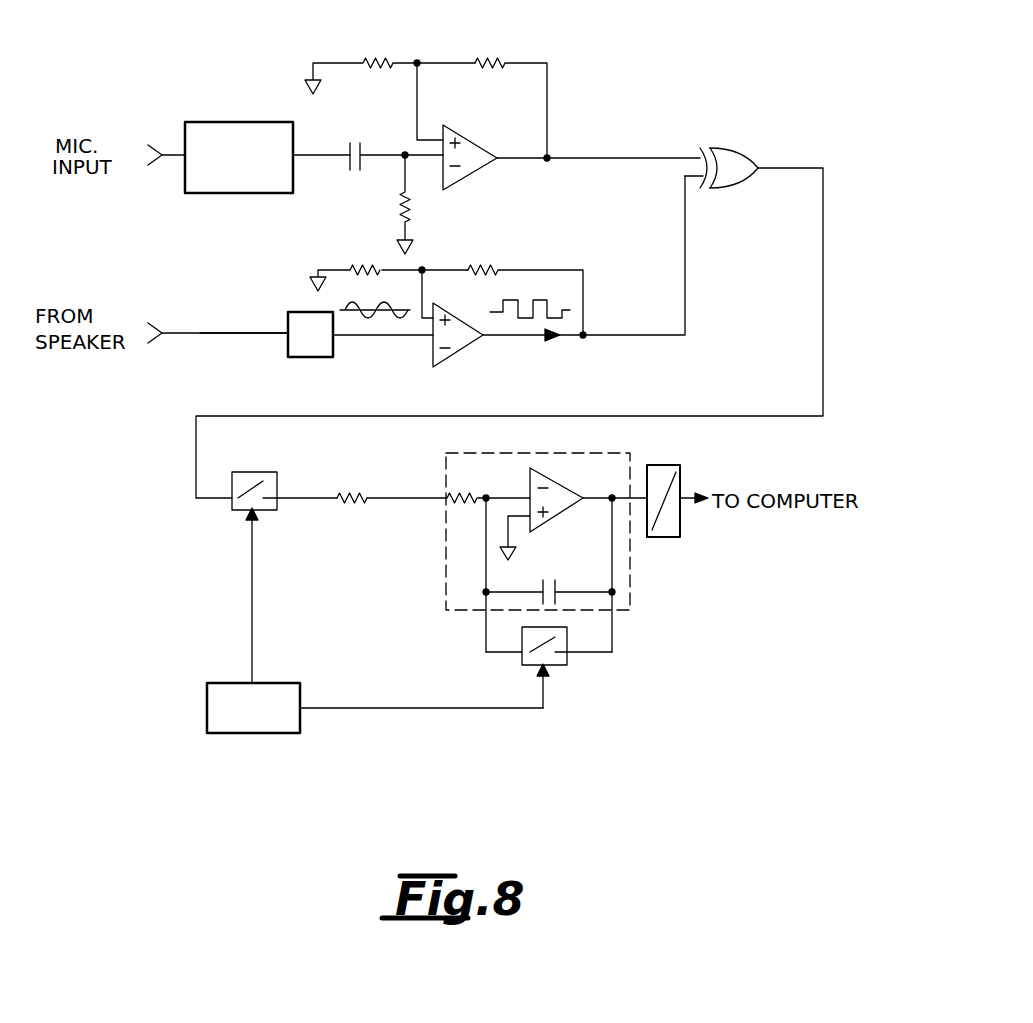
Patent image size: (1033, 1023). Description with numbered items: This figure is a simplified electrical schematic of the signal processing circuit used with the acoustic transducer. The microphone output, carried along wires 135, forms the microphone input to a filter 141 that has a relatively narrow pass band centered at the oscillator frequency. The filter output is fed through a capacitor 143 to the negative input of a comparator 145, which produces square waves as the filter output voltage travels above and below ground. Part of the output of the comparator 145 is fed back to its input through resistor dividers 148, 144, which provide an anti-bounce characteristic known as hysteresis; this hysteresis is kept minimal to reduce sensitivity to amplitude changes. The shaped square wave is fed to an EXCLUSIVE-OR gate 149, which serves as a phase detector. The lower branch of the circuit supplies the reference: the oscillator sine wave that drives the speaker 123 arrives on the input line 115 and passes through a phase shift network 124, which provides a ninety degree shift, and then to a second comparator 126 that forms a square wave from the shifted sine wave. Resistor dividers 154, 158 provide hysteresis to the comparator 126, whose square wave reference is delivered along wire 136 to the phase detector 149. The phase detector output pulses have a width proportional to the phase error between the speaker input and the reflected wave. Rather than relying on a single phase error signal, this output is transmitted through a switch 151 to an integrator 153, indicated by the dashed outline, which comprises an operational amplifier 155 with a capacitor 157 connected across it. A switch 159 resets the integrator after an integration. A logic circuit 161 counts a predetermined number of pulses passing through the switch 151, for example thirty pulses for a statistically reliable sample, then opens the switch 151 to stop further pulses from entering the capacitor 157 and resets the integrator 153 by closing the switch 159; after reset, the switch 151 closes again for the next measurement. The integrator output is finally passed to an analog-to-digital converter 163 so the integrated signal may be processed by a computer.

The wires 135 is at (168, 154).
The filter 141 is at (232, 194).
The capacitor 143 is at (365, 143).
The resistor divider 144 is at (382, 62).
The comparator 145 is at (472, 139).
The resistor divider 148 is at (492, 62).
The EXCLUSIVE-OR gate 149 is at (740, 150).
The speaker 123 is at (161, 351).
The speaker signal line 115 is at (259, 332).
The phase shift network 124 is at (288, 350).
The resistor divider 154 is at (362, 268).
The resistor divider 158 is at (490, 268).
The comparator 126 is at (465, 346).
The wire 136 is at (611, 322).
The switch 151 is at (232, 505).
The integrator 153 is at (447, 513).
The operational amplifier 155 is at (557, 513).
The capacitor 157 is at (556, 586).
The switch 159 is at (568, 662).
The logic circuit 161 is at (247, 735).
The analog-to-digital converter 163 is at (672, 539).